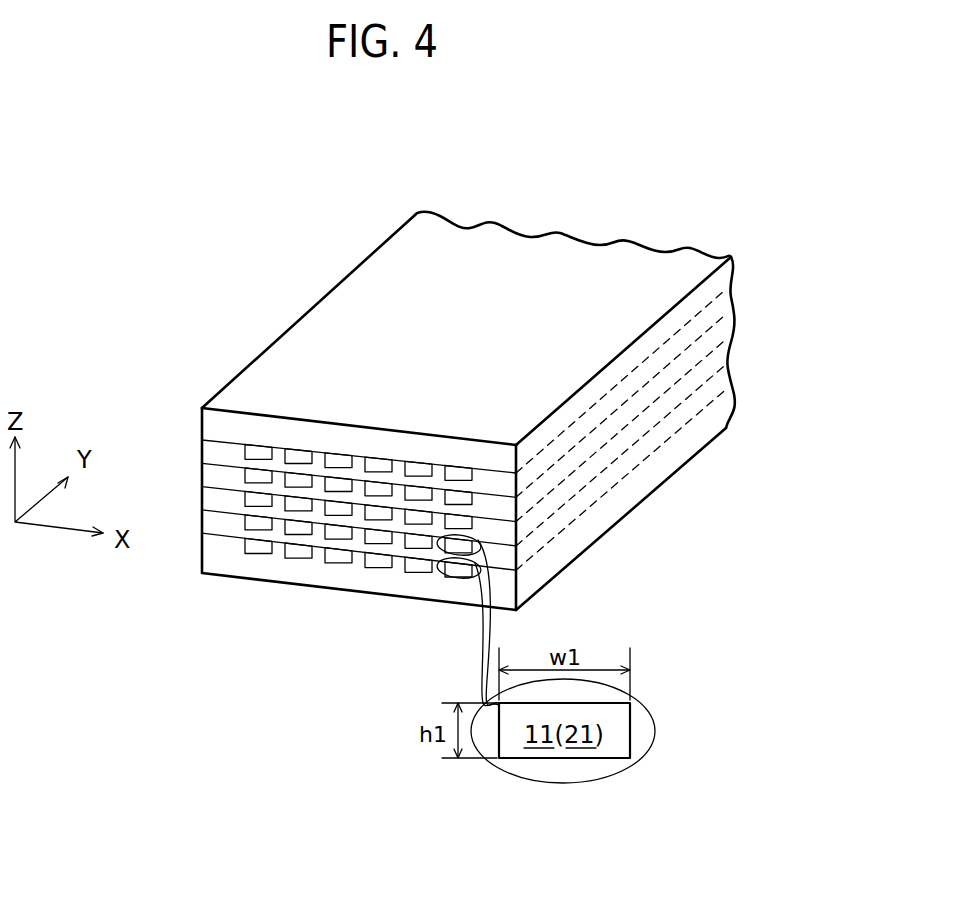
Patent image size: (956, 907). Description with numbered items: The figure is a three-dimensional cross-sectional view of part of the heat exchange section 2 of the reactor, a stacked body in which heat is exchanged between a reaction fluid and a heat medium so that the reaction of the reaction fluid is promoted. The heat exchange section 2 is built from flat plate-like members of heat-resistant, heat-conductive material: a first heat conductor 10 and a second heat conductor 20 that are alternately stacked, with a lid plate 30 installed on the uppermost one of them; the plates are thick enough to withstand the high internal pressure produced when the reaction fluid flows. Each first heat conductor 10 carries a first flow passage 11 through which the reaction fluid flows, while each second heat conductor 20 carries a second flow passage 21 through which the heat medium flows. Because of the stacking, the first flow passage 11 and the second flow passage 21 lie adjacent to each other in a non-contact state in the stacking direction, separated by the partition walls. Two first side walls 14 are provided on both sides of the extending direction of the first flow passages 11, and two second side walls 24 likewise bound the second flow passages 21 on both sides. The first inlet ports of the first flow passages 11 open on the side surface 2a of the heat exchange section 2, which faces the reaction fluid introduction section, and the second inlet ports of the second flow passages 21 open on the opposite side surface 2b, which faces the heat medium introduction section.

The heat exchange section 2 is at (449, 390).
The side surface 2a is at (447, 328).
The side surface 2b is at (248, 430).
The lid plate 30 is at (204, 420).
The first heat conductor 10 is at (204, 452).
The second heat conductor 20 is at (204, 527).
The first flow passage 11 is at (260, 452).
The second flow passage 21 is at (460, 548).
The first side wall 14 is at (567, 443).
The second side wall 24 is at (607, 432).